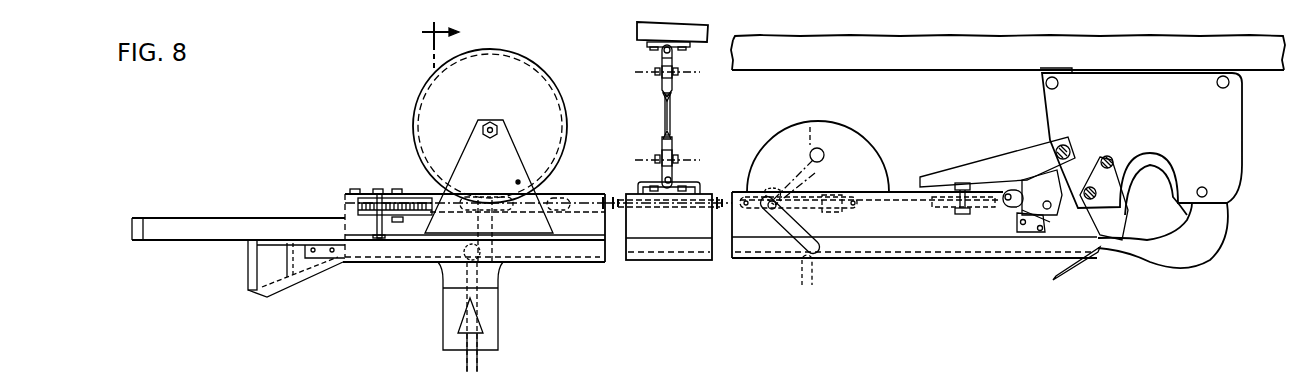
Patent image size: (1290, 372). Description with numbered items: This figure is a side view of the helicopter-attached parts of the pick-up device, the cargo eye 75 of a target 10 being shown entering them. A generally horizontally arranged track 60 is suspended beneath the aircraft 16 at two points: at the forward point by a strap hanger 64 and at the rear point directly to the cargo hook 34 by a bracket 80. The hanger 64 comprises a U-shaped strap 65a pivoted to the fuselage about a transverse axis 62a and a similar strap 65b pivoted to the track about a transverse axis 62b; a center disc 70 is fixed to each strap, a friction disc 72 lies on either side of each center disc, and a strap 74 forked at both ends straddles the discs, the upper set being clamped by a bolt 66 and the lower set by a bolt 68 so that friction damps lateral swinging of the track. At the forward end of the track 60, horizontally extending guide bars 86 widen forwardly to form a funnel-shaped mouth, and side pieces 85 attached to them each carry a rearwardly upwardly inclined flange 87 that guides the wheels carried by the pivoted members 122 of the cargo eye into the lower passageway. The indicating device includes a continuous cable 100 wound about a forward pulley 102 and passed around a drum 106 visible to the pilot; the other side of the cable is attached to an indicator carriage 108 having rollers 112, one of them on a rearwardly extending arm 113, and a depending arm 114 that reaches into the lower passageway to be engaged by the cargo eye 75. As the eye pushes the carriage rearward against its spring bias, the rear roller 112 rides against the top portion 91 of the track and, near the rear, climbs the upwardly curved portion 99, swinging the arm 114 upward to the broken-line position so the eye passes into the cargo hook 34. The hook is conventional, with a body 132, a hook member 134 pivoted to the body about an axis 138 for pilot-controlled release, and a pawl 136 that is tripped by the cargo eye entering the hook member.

The target 10 is at (428, 46).
The aircraft 16 is at (676, 25).
The cargo hook 34 is at (1250, 156).
The track 60 is at (568, 268).
The transverse axis 62a is at (660, 50).
The transverse axis 62b is at (673, 180).
The strap hanger 64 is at (722, 107).
The U-shaped strap 65a is at (673, 56).
The U-shaped strap 65b is at (662, 174).
The bolt 66 is at (658, 76).
The bolt 68 is at (660, 147).
The center disc 70 is at (672, 97).
The friction disc 72 is at (673, 80).
The strap 74 is at (672, 107).
The cargo eye 75 is at (480, 369).
The bracket 80 is at (982, 150).
The side piece 85 is at (250, 270).
The guide bar 86 is at (188, 218).
The flange 87 is at (300, 288).
The top portion 91 is at (588, 194).
The upwardly curved portion 99 is at (827, 127).
The cable 100 is at (672, 203).
The pulley 102 is at (366, 200).
The drum 106 is at (543, 72).
The indicator carriage 108 is at (758, 222).
The roller 112 is at (483, 200).
The arm 113 is at (813, 187).
The depending arm 114 is at (788, 232).
The member 122 is at (443, 328).
The body 132 is at (1243, 118).
The hook member 134 is at (1223, 247).
The pawl 136 is at (1137, 238).
The axis 138 is at (1210, 192).